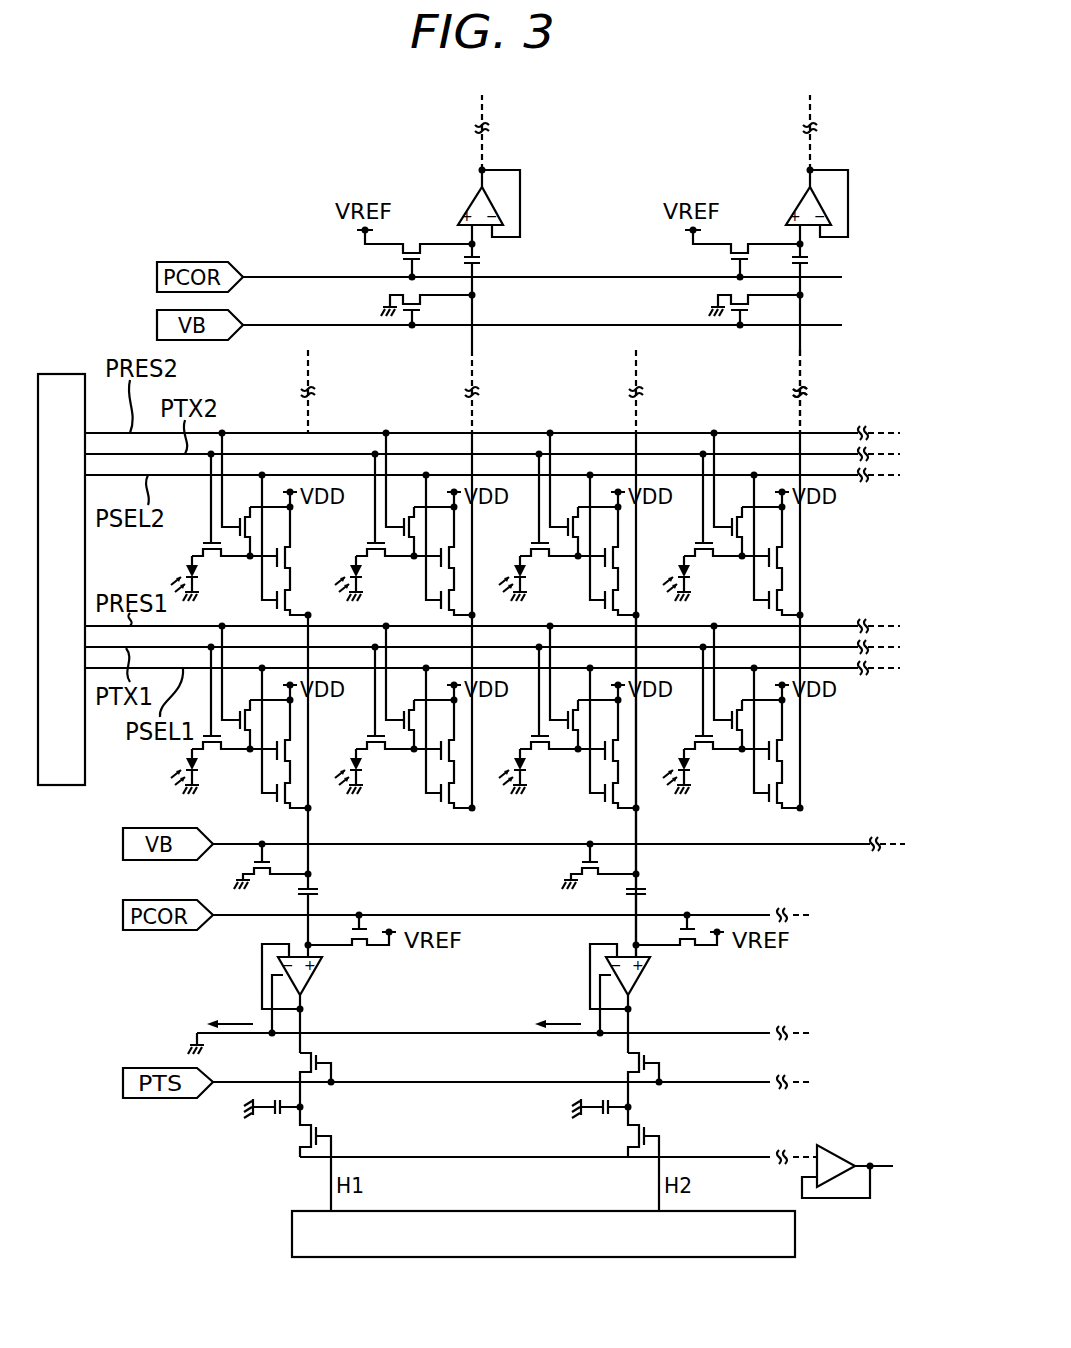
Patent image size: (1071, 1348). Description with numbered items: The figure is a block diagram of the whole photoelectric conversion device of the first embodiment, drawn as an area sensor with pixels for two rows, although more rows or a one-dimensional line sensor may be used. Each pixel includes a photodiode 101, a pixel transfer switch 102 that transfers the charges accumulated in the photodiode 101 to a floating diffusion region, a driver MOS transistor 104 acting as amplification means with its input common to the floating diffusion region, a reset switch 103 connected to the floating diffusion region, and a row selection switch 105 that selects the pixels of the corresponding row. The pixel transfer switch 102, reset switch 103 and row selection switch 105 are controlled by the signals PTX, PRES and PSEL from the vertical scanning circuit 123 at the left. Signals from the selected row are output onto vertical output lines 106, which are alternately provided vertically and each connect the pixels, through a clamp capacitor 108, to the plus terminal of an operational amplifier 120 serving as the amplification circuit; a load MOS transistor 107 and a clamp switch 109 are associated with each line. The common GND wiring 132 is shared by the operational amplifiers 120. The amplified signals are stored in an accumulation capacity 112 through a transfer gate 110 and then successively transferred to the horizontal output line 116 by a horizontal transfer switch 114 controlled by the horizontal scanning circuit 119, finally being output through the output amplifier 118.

The photodiode 101 is at (199, 571).
The pixel transfer switch 102 is at (198, 543).
The reset switch 103 is at (240, 515).
The driver MOS transistor 104 is at (280, 538).
The row selection switch 105 is at (272, 604).
The vertical output line 106 is at (306, 822).
The load MOS transistor 107 is at (248, 862).
The clamp capacitor 108 is at (320, 890).
The clamp switch 109 is at (362, 950).
The transfer gate 110 is at (316, 1052).
The accumulation capacity 112 is at (275, 1118).
The horizontal transfer switch 114 is at (295, 1140).
The horizontal output line 116 is at (305, 1160).
The output amplifier 118 is at (840, 1148).
The horizontal scanning circuit 119 is at (796, 1238).
The operational amplifier 120 is at (314, 973).
The vertical scanning circuit 123 is at (70, 374).
The common GND wiring 132 is at (470, 1033).